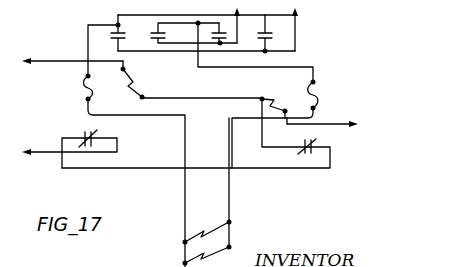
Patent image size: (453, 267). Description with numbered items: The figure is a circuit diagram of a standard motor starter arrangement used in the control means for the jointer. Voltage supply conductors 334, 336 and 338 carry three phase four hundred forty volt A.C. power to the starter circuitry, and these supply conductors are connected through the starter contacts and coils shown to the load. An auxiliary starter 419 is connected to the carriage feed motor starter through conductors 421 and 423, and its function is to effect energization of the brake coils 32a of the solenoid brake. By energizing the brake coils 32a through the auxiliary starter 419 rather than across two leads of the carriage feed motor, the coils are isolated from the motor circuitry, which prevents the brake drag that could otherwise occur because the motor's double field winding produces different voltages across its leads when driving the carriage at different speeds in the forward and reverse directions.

The supply conductor 334 is at (283, 0).
The supply conductor 338 is at (296, 25).
The conductor 421 is at (58, 46).
The conductor 423 is at (332, 124).
The supply conductor 336 is at (49, 148).
The auxiliary starter 419 is at (292, 189).
The brake coils 32a is at (182, 241).